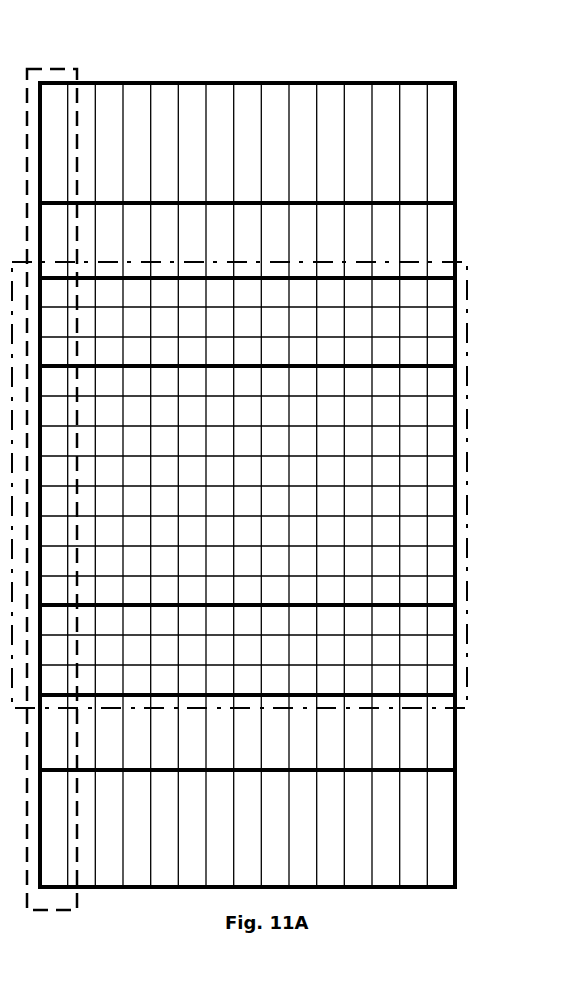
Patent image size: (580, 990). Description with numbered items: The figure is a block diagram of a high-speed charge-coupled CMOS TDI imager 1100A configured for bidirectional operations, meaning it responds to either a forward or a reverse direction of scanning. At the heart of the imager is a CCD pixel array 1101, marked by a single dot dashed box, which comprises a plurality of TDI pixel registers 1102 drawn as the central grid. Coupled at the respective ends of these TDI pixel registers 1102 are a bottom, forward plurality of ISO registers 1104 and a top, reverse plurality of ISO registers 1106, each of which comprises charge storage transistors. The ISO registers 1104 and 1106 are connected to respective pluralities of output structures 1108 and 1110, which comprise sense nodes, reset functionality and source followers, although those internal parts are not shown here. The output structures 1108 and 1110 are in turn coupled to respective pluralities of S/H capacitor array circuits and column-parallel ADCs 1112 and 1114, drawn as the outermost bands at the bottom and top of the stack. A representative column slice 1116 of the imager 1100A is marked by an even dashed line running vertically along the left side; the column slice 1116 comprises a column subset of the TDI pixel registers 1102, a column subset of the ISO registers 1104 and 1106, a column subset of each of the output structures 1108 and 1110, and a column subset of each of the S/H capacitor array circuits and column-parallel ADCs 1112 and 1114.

The high-speed charge-coupled CMOS TDI imager 1100A is at (98, 56).
The CCD pixel array 1101 is at (467, 578).
The TDI pixel registers 1102 is at (455, 490).
The bottom (forward) ISO registers 1104 is at (455, 670).
The top (reverse) ISO registers 1106 is at (455, 310).
The output structures 1108 is at (455, 753).
The output structures 1110 is at (455, 225).
The S/H capacitor array circuits and column-parallel ADCs 1112 is at (455, 828).
The S/H capacitor array circuits and column-parallel ADCs 1114 is at (455, 147).
The column slice 1116 is at (77, 893).